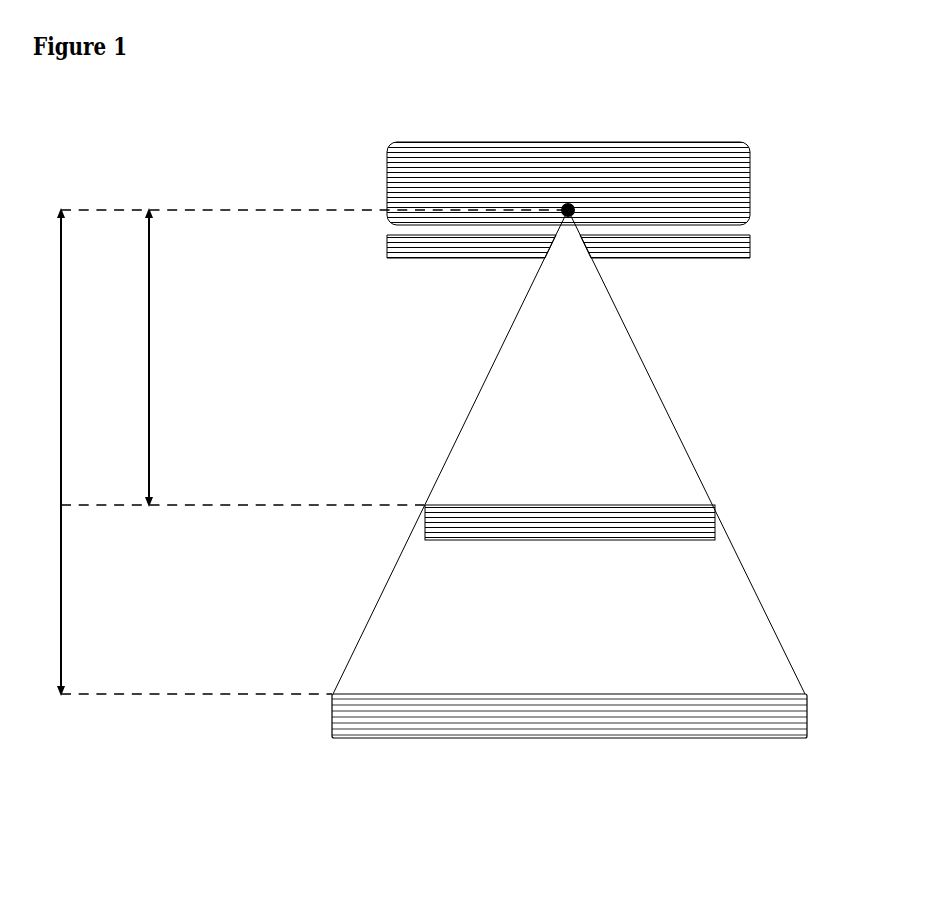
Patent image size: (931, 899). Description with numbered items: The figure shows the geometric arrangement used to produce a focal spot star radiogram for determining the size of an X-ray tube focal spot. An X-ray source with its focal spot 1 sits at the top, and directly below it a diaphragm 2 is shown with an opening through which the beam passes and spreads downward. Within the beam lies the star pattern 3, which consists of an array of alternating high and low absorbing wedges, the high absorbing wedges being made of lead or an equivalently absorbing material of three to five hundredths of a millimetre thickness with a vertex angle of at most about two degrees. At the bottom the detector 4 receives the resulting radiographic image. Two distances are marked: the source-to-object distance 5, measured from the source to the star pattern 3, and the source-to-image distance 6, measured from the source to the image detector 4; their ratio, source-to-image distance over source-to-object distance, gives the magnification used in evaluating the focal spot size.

The X-ray source with focal spot 1 is at (571, 204).
The diaphragm 2 is at (487, 245).
The star pattern 3 is at (570, 537).
The detector 4 is at (569, 716).
The source-to-object distance (SOD) 5 is at (179, 357).
The source-to-image distance (SID) 6 is at (39, 452).